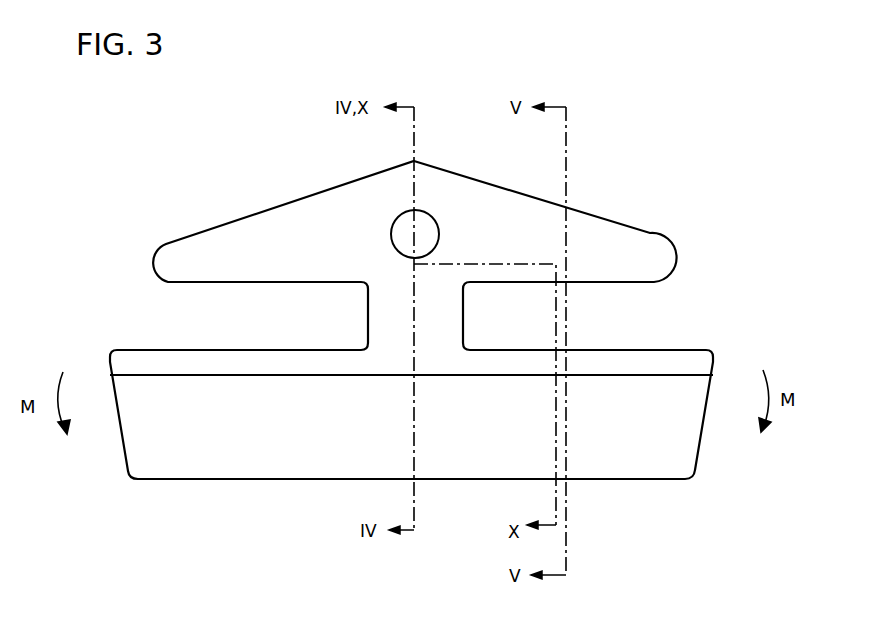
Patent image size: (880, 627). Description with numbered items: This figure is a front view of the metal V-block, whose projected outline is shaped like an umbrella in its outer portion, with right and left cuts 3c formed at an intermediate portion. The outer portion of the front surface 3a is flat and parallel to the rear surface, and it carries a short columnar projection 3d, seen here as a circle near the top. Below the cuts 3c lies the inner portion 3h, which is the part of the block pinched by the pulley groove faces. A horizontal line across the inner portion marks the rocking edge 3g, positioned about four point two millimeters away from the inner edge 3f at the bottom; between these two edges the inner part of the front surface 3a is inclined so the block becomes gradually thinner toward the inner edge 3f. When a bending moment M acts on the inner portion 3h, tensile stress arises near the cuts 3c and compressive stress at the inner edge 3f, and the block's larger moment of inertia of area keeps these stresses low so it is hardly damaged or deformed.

The front surface 3a is at (602, 247).
The cut 3c is at (173, 325).
The short columnar projection 3d is at (423, 225).
The inner edge 3f is at (617, 479).
The rocking edge 3g is at (673, 375).
The inner portion 3h is at (318, 445).